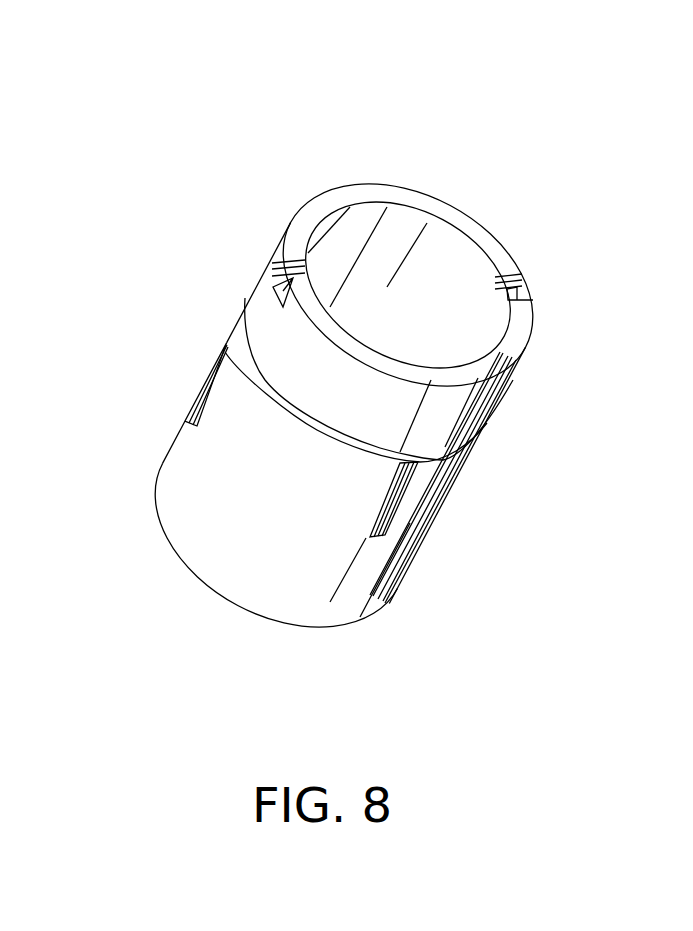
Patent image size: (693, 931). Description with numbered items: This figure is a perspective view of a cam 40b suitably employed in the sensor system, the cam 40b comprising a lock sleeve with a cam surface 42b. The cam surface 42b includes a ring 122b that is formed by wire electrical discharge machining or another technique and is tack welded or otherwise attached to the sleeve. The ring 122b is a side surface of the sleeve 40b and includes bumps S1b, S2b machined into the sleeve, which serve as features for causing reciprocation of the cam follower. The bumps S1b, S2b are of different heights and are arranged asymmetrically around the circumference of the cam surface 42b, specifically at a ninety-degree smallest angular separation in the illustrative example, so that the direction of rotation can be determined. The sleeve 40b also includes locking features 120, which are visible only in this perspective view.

The cam 40b is at (236, 219).
The locking features 120 is at (300, 228).
The bump S2b is at (197, 393).
The ring 122b is at (460, 457).
The cam surface 42b is at (460, 496).
The bump S1b is at (393, 512).